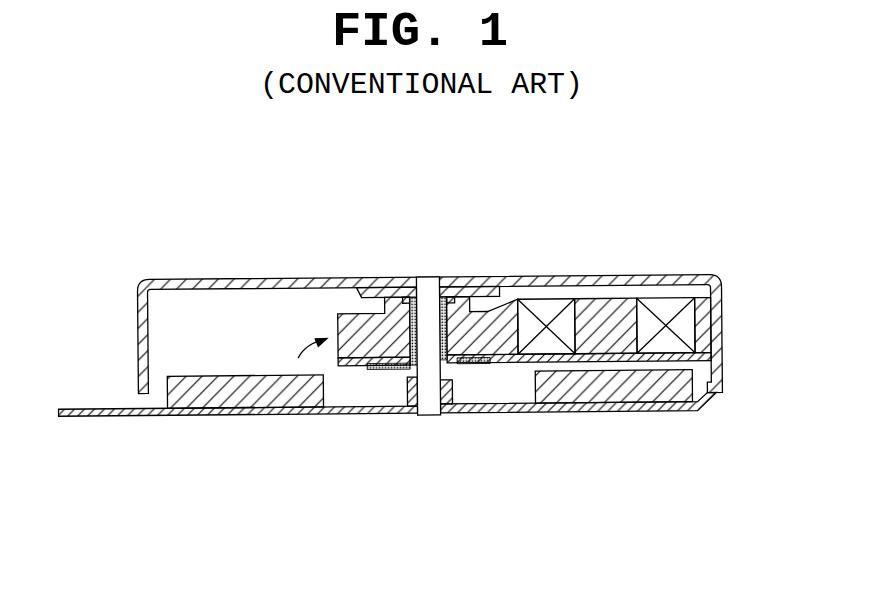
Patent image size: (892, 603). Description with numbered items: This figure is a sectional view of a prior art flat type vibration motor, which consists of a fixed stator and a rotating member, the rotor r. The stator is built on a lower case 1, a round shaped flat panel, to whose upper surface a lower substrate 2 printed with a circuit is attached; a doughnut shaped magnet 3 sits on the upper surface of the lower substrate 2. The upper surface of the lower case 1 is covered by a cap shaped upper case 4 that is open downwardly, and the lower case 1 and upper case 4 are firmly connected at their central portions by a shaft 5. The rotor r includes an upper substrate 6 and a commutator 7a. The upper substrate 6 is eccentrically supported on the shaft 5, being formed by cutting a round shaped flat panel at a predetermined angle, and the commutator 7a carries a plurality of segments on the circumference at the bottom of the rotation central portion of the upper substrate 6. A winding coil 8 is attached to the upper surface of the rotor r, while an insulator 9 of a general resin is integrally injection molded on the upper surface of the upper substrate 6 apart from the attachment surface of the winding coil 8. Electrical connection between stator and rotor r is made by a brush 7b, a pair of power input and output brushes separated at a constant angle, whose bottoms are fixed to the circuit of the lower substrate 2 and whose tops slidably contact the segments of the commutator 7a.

The lower case 1 is at (680, 412).
The lower substrate 2 is at (128, 406).
The magnet 3 is at (233, 398).
The upper case 4 is at (333, 277).
The shaft 5 is at (432, 277).
The upper substrate 6 is at (527, 364).
The commutator 7a is at (378, 365).
The brush 7b is at (462, 405).
The winding coil 8 is at (547, 300).
The insulator 9 is at (603, 301).
The rotor r is at (298, 357).